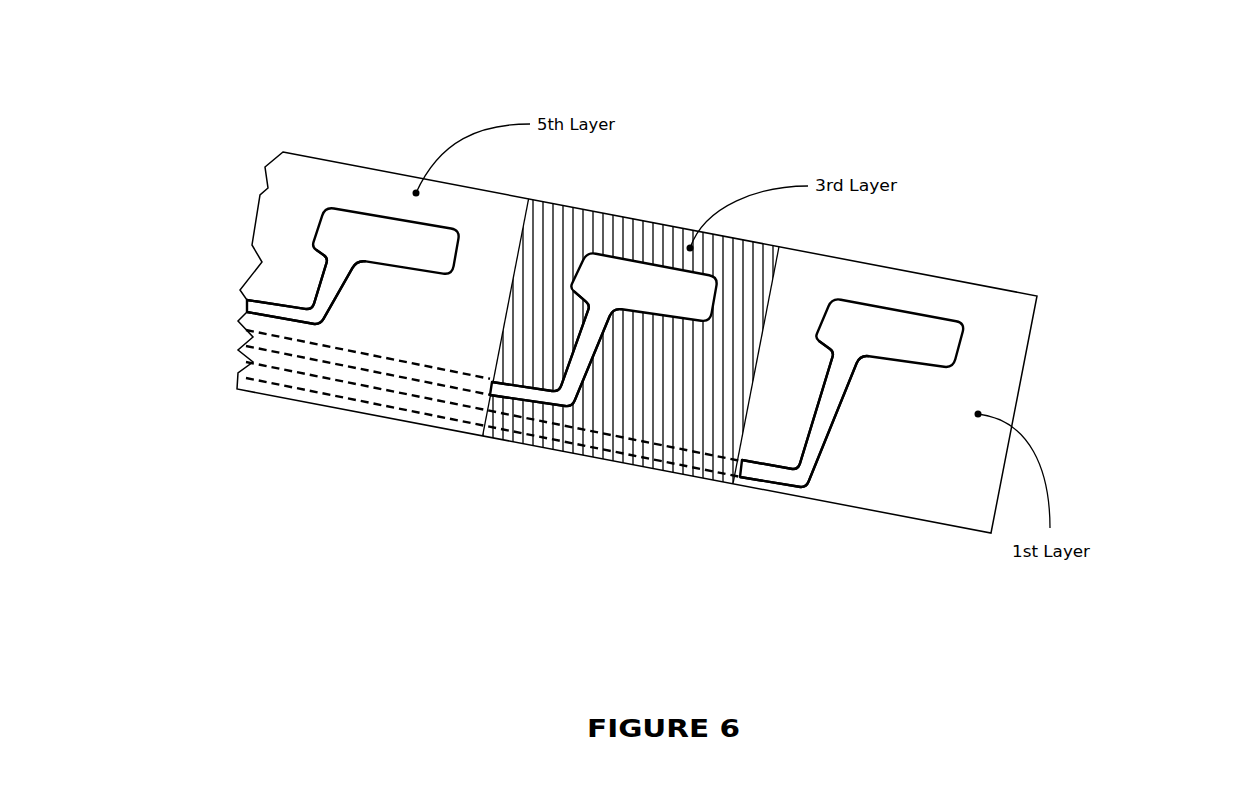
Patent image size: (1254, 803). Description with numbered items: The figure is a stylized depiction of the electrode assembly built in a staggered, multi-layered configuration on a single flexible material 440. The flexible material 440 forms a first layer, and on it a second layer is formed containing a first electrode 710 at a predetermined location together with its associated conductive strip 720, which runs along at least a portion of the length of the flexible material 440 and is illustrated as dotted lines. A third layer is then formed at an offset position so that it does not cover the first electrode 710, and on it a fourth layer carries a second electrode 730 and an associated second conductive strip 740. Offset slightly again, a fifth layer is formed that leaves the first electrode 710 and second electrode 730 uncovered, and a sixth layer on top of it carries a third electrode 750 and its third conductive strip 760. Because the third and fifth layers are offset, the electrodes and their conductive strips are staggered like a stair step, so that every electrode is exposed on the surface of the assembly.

The flexible material 440 is at (158, 209).
The third electrode 750 is at (346, 198).
The third conductive strip 760 is at (262, 316).
The second electrode 730 is at (611, 252).
The second conductive strip 740 is at (512, 400).
The first electrode 710 is at (849, 298).
The conductive strip 720 is at (787, 485).